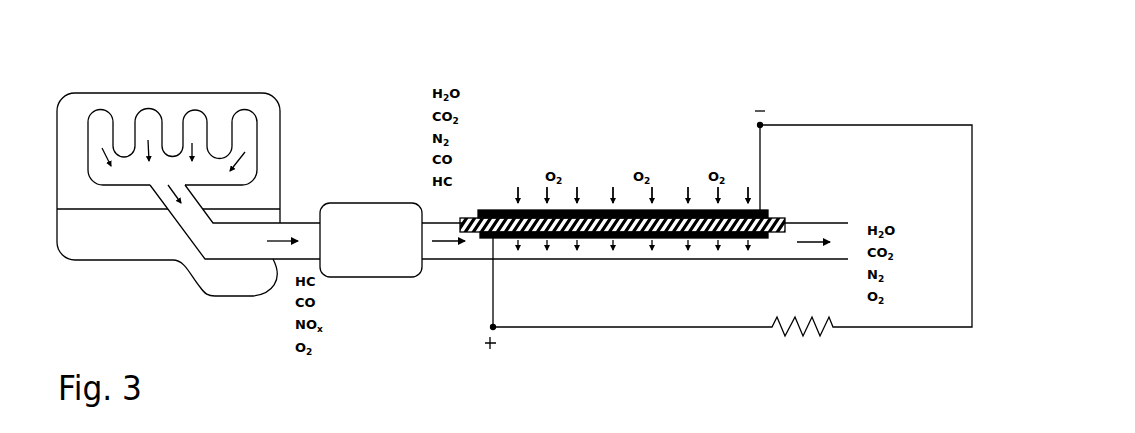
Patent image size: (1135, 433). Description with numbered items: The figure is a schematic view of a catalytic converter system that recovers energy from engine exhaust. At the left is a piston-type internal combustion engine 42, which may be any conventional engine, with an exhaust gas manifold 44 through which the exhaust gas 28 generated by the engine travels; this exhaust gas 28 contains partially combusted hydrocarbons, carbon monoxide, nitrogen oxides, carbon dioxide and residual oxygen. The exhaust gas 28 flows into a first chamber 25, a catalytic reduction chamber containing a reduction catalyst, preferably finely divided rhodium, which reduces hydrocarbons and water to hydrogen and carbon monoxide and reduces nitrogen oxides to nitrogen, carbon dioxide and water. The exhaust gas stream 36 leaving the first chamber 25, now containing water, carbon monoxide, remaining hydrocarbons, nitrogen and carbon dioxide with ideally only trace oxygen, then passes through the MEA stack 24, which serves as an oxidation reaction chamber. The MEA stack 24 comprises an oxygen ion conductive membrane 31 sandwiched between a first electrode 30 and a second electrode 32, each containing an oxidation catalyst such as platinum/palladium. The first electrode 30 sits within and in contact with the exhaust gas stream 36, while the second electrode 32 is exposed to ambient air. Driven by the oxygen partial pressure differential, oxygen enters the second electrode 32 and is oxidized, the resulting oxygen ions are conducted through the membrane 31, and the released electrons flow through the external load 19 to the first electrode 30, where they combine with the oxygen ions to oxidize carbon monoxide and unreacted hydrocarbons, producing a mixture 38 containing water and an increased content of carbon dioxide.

The external load 19 is at (829, 320).
The MEA stack 24 is at (691, 161).
The first chamber 25 is at (342, 277).
The exhaust gas 28 is at (283, 244).
The first electrode 30 is at (667, 238).
The oxygen ion conductive membrane 31 is at (777, 218).
The second electrode 32 is at (662, 210).
The exhaust gas stream 36 is at (447, 247).
The mixture 38 is at (823, 238).
The piston-type internal combustion engine 42 is at (108, 93).
The exhaust gas manifold 44 is at (253, 120).